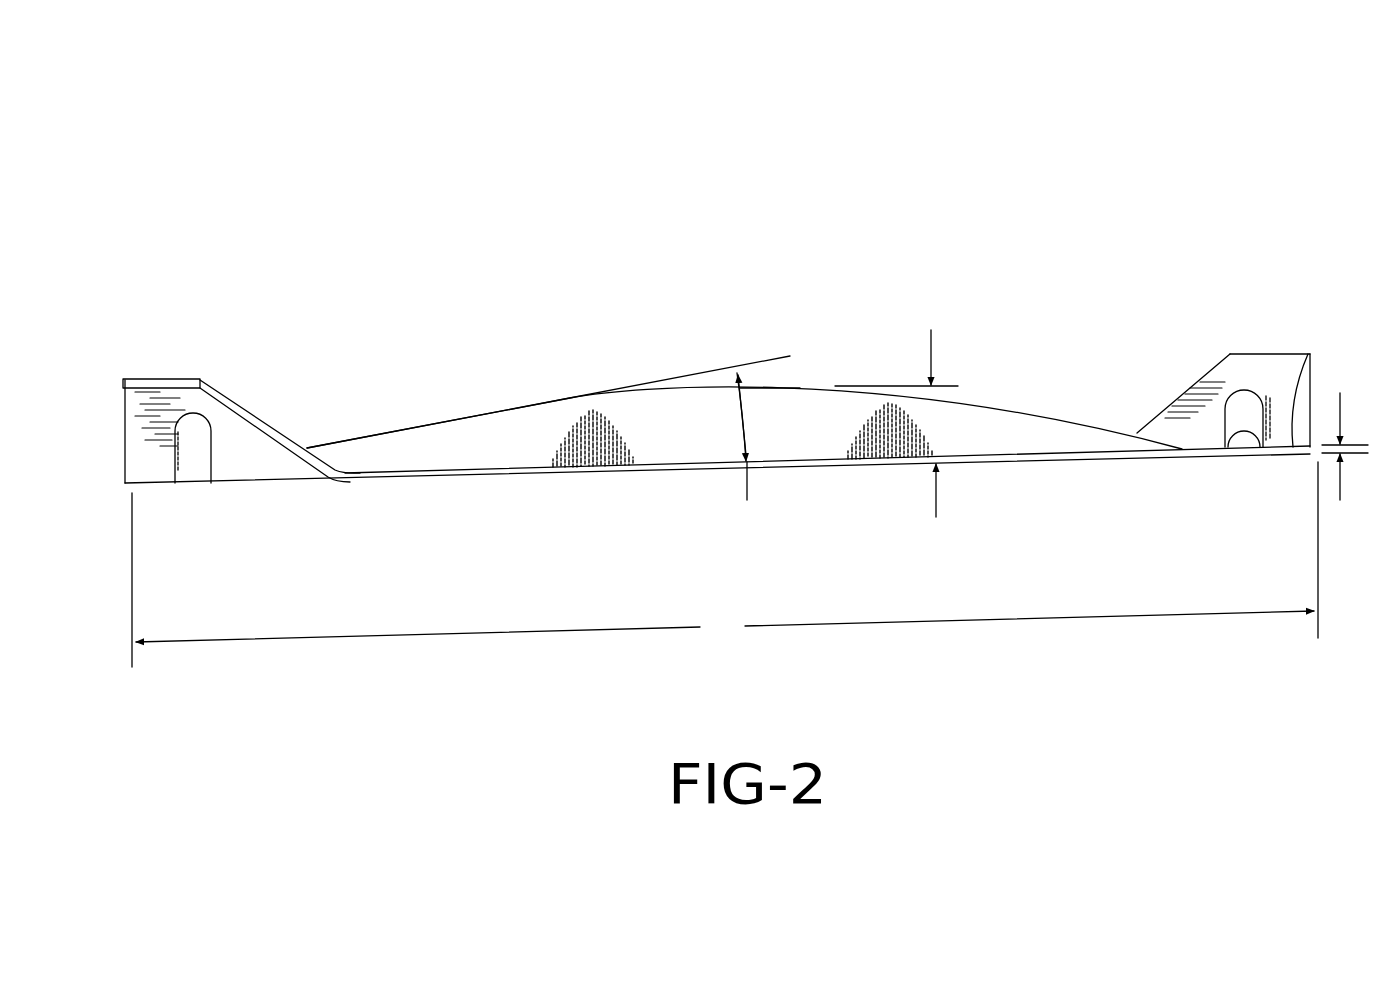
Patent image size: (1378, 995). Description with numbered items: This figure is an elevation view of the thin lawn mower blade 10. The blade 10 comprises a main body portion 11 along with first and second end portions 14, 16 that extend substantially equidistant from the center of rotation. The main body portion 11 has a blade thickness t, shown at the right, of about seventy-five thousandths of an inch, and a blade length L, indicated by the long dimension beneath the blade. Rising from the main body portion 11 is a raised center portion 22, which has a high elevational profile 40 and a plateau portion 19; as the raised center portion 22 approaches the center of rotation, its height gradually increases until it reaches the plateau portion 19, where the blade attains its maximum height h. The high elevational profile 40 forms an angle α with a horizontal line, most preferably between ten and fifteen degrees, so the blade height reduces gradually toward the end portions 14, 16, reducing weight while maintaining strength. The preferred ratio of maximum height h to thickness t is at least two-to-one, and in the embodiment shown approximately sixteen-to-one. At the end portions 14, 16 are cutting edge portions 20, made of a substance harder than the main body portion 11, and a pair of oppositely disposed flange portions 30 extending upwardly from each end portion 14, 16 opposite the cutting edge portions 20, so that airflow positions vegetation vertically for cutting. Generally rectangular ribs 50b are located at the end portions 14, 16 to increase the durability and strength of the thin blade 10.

The thin lawn mower blade 10 is at (971, 199).
The main body portion 11 is at (540, 476).
The first end portion 14 is at (125, 470).
The second end portion 16 is at (1309, 356).
The plateau portion 19 is at (797, 388).
The cutting edge portion 20 is at (1232, 450).
The raised center portion 22 is at (551, 323).
The flange portion 30 is at (170, 385).
The high elevational profile 40 is at (476, 385).
The ribs 50b is at (193, 452).